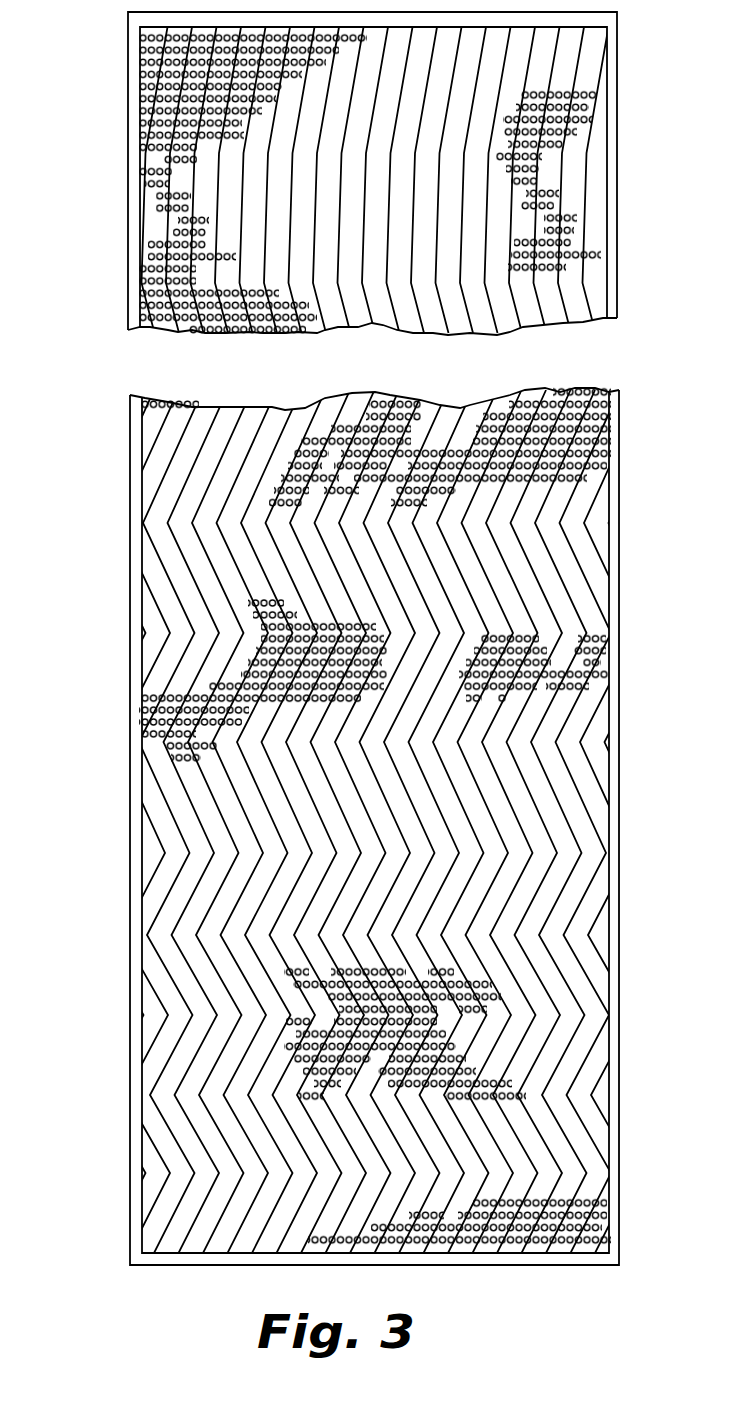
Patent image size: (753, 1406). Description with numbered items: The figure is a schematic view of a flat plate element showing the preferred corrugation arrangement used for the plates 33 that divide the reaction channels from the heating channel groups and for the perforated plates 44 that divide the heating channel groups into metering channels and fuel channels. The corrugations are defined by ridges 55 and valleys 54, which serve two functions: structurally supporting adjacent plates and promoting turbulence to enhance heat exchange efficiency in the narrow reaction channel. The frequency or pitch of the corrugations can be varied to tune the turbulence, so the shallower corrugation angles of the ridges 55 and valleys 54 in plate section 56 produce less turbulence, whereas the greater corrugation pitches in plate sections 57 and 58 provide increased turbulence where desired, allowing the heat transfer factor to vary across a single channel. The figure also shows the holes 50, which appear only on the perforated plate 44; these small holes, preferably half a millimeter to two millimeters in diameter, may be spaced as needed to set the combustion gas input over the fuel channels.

The plate 33 is at (364, 825).
The perforated plate 44 is at (396, 825).
The holes 50 is at (432, 970).
The valleys 54 is at (548, 157).
The ridges 55 is at (578, 1035).
The plate section 56 is at (438, 201).
The plate section 57 is at (435, 598).
The plate section 58 is at (445, 1112).